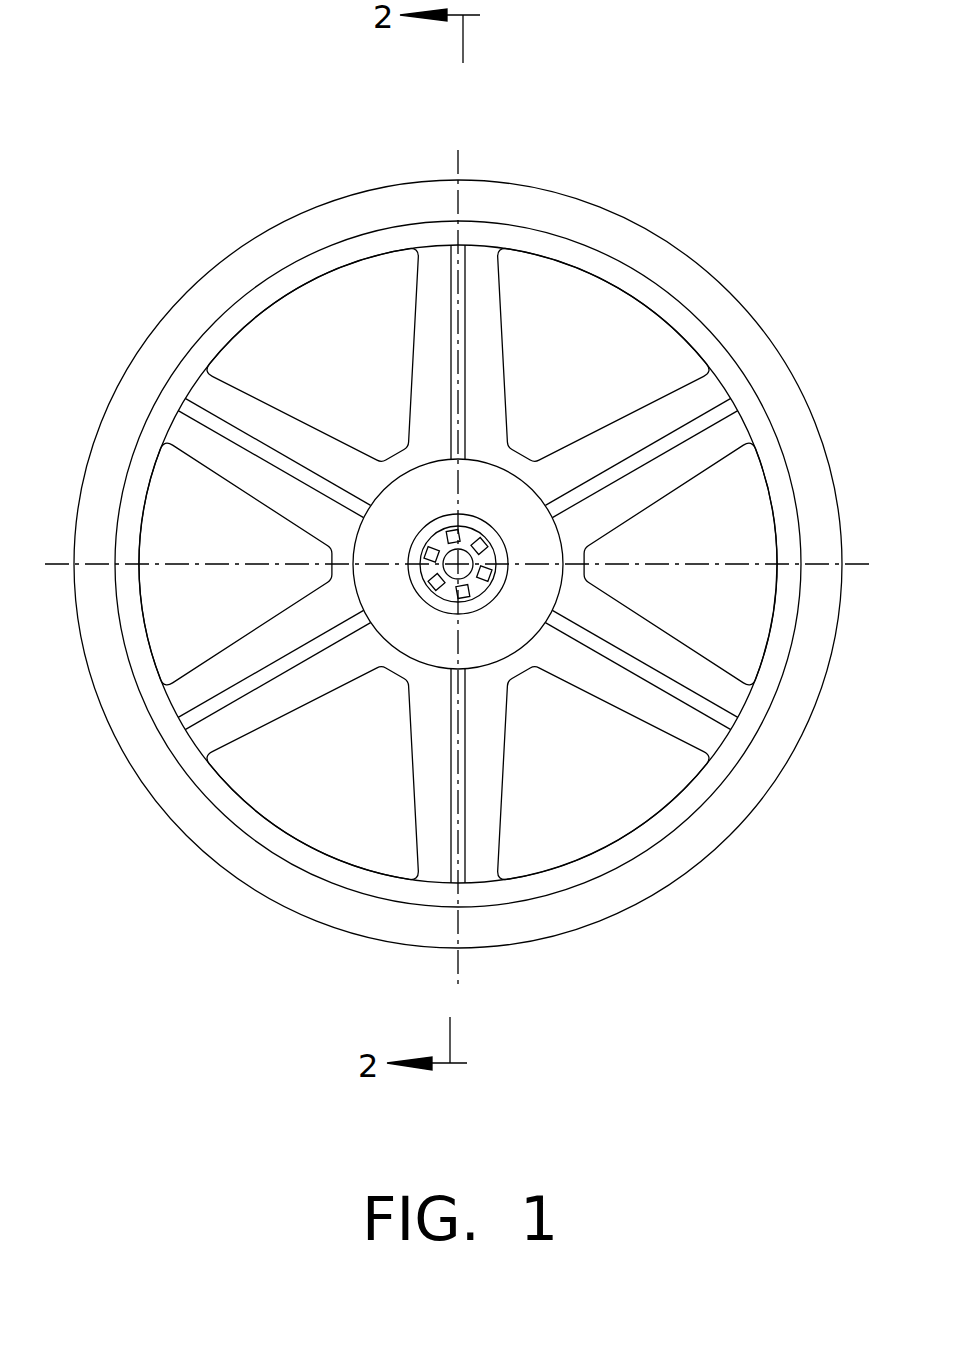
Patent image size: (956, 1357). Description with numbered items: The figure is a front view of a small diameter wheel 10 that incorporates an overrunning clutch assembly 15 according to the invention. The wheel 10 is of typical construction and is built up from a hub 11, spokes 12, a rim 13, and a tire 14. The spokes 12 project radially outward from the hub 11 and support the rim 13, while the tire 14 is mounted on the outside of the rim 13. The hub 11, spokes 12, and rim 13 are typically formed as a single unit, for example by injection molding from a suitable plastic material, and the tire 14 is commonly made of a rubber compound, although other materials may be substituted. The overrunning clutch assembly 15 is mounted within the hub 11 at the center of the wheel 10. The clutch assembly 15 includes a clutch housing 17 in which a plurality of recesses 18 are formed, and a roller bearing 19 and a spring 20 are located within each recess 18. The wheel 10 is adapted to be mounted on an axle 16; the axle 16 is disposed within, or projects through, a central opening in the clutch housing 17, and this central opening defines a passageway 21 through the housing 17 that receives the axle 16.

The small diameter wheel 10 is at (178, 258).
The hub 11 is at (390, 642).
The spokes 12 is at (413, 364).
The rim 13 is at (313, 250).
The tire 14 is at (603, 208).
The overrunning clutch assembly 15 is at (472, 500).
The axle 16 is at (432, 557).
The clutch housing 17 is at (435, 565).
The recesses 18 is at (480, 582).
The roller bearing 19 is at (465, 595).
The spring 20 is at (478, 587).
The passageway 21 is at (483, 548).